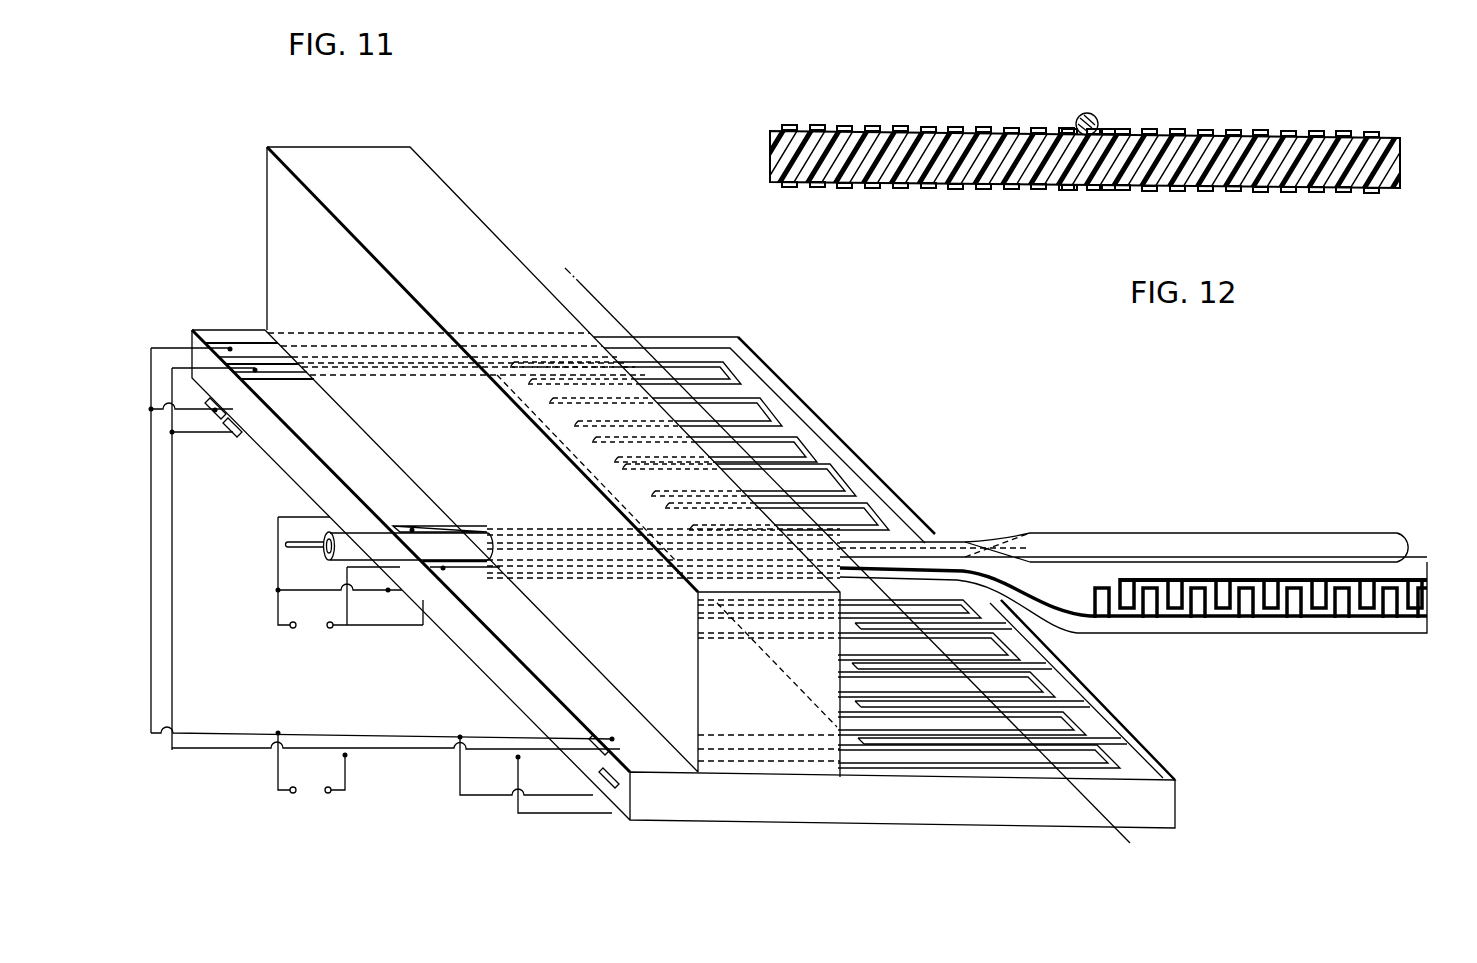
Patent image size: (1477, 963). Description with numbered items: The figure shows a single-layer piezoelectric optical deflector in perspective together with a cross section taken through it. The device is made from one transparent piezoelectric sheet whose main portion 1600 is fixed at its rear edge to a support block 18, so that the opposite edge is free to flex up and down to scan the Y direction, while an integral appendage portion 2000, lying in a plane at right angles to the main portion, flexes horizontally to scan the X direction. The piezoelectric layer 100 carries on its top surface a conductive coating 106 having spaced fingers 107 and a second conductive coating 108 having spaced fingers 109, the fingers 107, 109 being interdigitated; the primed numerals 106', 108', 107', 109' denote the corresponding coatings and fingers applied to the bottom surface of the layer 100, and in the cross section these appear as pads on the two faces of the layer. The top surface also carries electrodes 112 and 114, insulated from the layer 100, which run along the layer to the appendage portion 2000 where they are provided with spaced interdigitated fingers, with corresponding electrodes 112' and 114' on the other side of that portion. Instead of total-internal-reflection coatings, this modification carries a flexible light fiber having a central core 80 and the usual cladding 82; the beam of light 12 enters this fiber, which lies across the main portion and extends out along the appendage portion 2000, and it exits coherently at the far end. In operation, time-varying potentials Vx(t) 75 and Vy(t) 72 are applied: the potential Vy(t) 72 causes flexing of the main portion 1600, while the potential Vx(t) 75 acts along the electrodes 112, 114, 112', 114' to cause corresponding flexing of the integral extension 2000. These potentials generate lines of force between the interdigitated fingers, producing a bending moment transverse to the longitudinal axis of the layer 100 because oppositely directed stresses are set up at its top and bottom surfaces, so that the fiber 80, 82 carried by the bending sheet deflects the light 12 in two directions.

In FIG. 11, the support block 18 is at (440, 248).
In FIG. 11, the piezoelectric layer 100 is at (1386, 541).
In FIG. 12, the piezoelectric layer 100 is at (1238, 152).
In FIG. 11, the conductive coating 106 is at (688, 544).
In FIG. 11, the conductive coating 108 is at (673, 550).
In FIG. 11, the conductive coating 106' is at (397, 623).
In FIG. 11, the conductive coating 108' is at (410, 603).
In FIG. 11, the spaced fingers 107 is at (764, 418).
In FIG. 12, the spaced fingers 107 is at (1048, 100).
In FIG. 11, the spaced fingers 109 is at (760, 400).
In FIG. 12, the spaced fingers 109 is at (1092, 100).
In FIG. 12, the spaced fingers 107' is at (1053, 208).
In FIG. 12, the spaced fingers 109' is at (1094, 208).
In FIG. 11, the electrode 112 is at (901, 547).
In FIG. 12, the electrode 112 is at (1055, 102).
In FIG. 11, the electrode 114 is at (925, 608).
In FIG. 12, the electrode 114 is at (1124, 102).
In FIG. 11, the electrode 112' is at (377, 594).
In FIG. 12, the electrode 112' is at (1047, 210).
In FIG. 11, the electrode 114' is at (416, 631).
In FIG. 12, the electrode 114' is at (1133, 210).
In FIG. 11, the cladding 82 is at (323, 535).
In FIG. 12, the cladding 82 is at (1082, 114).
In FIG. 11, the central core 80 is at (326, 556).
In FIG. 12, the central core 80 is at (1092, 113).
In FIG. 11, the X deflection voltage source 75 is at (298, 660).
In FIG. 11, the Y deflection voltage source 72 is at (312, 822).
In FIG. 11, the beam of light 12 is at (1455, 550).
In FIG. 11, the main portion 1600 is at (930, 468).
In FIG. 11, the appendage portion 2000 is at (1244, 525).